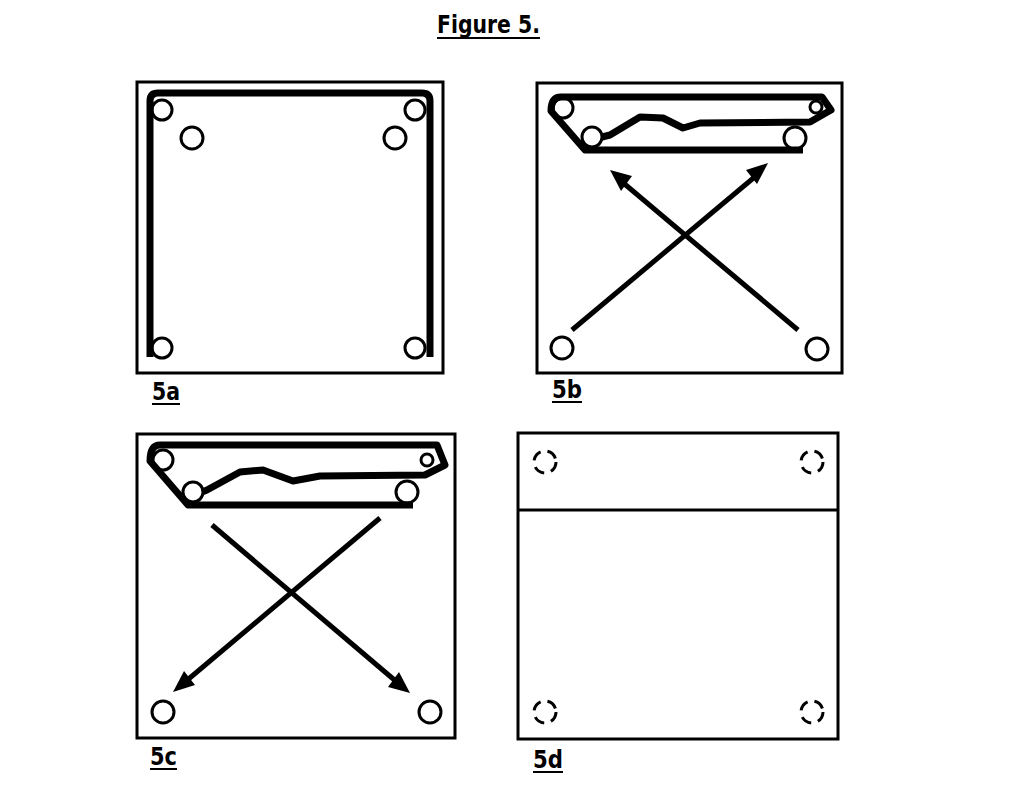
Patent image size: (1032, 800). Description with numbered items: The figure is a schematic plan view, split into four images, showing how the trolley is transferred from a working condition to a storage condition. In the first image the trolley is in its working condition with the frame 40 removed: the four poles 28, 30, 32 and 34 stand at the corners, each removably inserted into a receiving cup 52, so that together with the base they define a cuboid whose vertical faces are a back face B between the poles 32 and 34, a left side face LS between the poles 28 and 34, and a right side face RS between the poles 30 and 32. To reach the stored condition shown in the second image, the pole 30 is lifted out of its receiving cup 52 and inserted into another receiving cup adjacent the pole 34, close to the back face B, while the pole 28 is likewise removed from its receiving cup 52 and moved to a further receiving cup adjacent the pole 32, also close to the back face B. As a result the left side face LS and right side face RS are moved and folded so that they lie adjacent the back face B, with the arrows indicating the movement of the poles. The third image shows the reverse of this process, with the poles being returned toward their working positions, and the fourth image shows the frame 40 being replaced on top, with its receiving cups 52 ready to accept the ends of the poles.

The back face B is at (295, 92).
The left side face LS is at (148, 208).
The right side face RS is at (433, 237).
The pole 34 is at (155, 105).
The pole 32 is at (397, 93).
The pole 28 is at (155, 345).
The pole 30 is at (430, 357).
The receiving cup 52 is at (551, 347).
The frame 40 is at (680, 718).